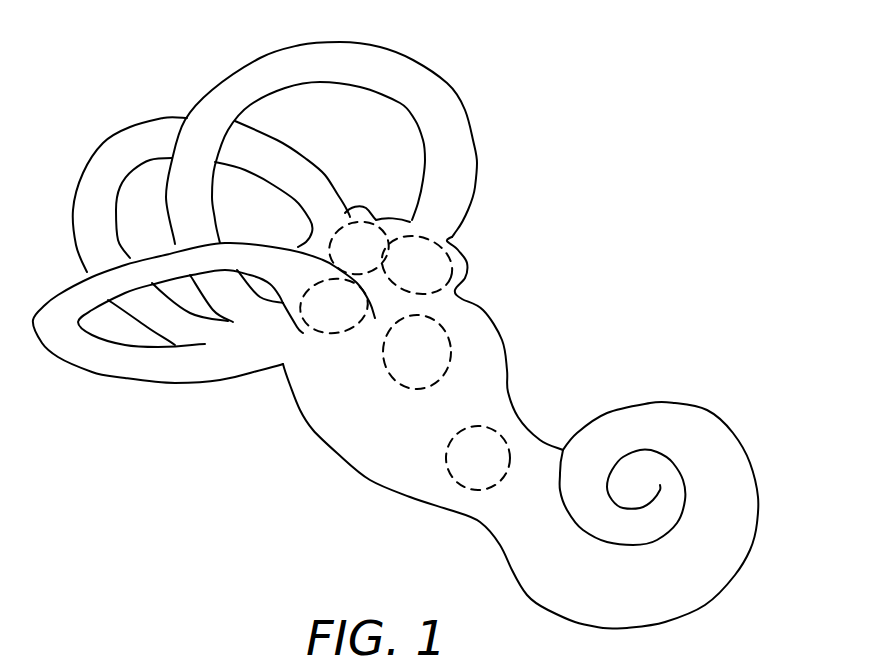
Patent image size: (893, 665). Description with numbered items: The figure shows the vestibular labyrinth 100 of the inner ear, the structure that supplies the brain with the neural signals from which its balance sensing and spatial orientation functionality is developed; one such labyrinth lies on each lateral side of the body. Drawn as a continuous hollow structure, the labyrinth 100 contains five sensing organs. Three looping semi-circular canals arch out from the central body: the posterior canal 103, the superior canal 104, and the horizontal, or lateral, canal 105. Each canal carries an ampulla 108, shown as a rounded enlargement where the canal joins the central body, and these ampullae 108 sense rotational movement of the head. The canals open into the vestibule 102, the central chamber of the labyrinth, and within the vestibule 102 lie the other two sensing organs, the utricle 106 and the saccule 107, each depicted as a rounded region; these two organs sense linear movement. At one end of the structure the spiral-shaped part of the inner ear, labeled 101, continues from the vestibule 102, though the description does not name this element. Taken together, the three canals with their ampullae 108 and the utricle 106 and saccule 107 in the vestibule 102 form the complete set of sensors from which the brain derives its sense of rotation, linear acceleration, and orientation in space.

The inner ear vestibular labyrinth 100 is at (661, 167).
The cochlea 101 is at (643, 466).
The vestibule 102 is at (340, 450).
The posterior canal 103 is at (87, 357).
The superior canal 104 is at (130, 137).
The horizontal (lateral) canal 105 is at (410, 67).
The utricle 106 is at (456, 334).
The saccule 107 is at (455, 478).
The ampullae 108 is at (397, 214).